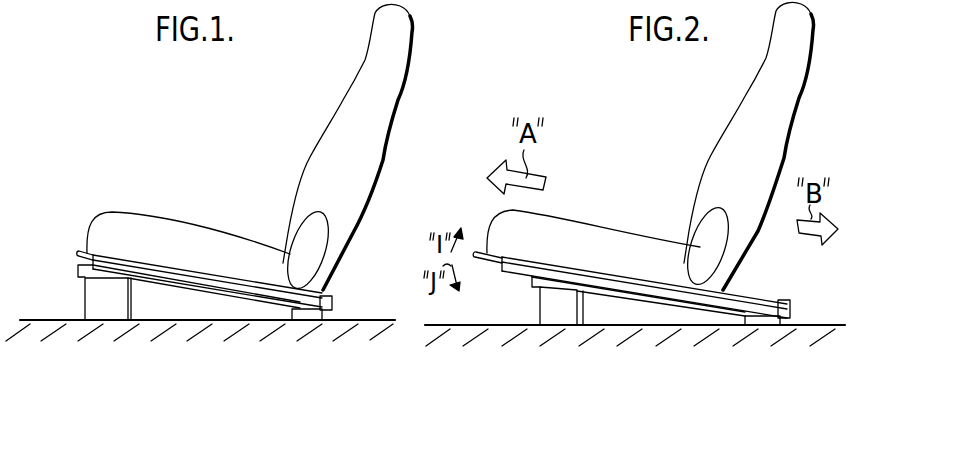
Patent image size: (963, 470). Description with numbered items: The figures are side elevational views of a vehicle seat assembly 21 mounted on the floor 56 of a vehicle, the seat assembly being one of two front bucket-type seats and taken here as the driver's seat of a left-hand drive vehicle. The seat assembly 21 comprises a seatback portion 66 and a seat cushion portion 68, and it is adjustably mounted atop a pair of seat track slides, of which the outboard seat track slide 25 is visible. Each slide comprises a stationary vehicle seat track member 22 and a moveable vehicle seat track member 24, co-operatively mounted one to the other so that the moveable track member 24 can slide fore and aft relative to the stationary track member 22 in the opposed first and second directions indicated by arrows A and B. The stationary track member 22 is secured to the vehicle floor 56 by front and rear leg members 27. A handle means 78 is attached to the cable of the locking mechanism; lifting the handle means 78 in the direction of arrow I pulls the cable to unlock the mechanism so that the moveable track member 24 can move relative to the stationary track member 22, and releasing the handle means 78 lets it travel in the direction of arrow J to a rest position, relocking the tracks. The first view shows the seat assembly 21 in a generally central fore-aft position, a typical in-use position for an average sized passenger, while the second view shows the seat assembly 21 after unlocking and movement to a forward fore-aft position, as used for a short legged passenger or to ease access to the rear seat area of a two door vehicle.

In FIG. 1, the vehicle seat assembly 21 is at (231, 130).
In FIG. 2, the vehicle seat assembly 21 is at (619, 136).
In FIG. 1, the stationary vehicle seat track member 22 is at (160, 286).
In FIG. 2, the stationary vehicle seat track member 22 is at (624, 290).
In FIG. 1, the moveable vehicle seat track member 24 is at (146, 275).
In FIG. 2, the moveable vehicle seat track member 24 is at (623, 282).
In FIG. 1, the outboard seat track slide 25 is at (322, 291).
In FIG. 2, the outboard seat track slide 25 is at (727, 292).
In FIG. 1, the front and rear leg members 27 is at (86, 297).
In FIG. 2, the front and rear leg members 27 is at (538, 292).
In FIG. 1, the vehicle floor 56 is at (103, 330).
In FIG. 2, the vehicle floor 56 is at (534, 332).
In FIG. 1, the seatback portion 66 is at (388, 88).
In FIG. 2, the seatback portion 66 is at (797, 62).
In FIG. 1, the seat cushion portion 68 is at (238, 240).
In FIG. 2, the seat cushion portion 68 is at (593, 232).
In FIG. 1, the handle means 78 is at (76, 250).